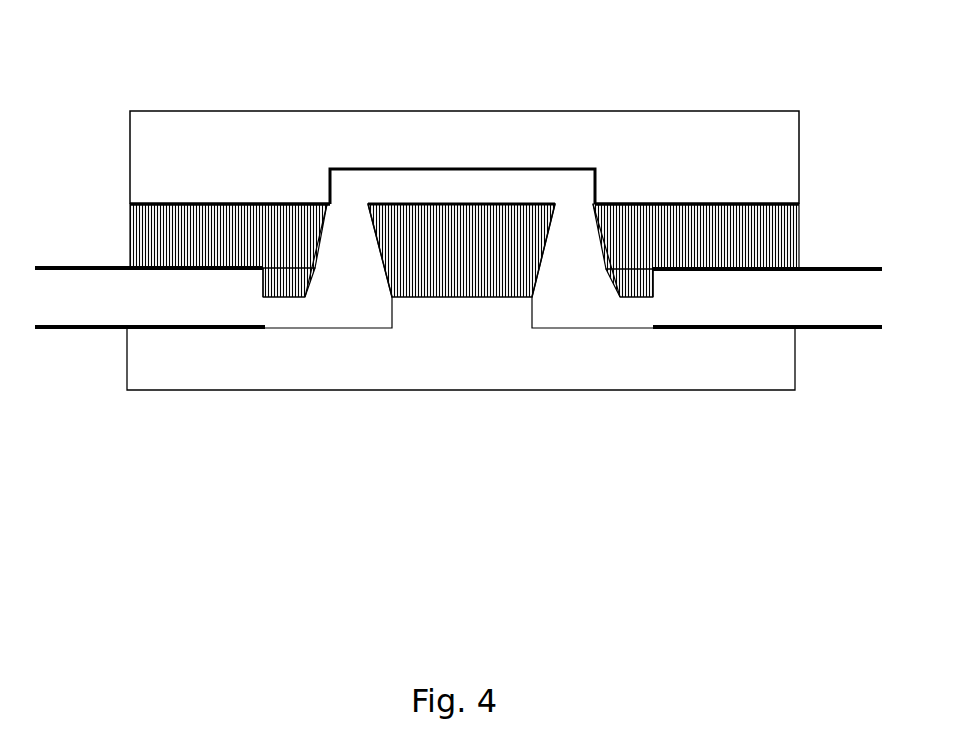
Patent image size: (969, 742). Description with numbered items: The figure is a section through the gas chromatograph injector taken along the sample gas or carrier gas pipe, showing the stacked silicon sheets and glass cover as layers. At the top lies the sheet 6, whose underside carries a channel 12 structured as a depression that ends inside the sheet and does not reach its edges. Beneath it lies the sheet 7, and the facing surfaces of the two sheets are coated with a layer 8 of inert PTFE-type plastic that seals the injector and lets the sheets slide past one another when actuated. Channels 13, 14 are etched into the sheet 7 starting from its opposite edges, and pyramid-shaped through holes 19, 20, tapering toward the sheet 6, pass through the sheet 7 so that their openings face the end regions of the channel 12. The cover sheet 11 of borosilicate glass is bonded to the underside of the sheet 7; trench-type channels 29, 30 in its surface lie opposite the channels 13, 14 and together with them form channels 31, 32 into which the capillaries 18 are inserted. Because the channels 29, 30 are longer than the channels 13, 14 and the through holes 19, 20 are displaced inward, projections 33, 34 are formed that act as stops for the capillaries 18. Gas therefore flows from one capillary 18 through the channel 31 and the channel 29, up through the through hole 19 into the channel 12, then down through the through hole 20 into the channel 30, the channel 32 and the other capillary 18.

The sheet 6 is at (645, 133).
The sheet 7 is at (758, 235).
The layer 8 is at (250, 203).
The cover sheet 11 is at (662, 370).
The channels 12 is at (457, 187).
The channel 13 is at (163, 282).
The channel 14 is at (722, 282).
The capillaries 18 is at (73, 327).
The through hole 19 is at (355, 258).
The through hole 20 is at (565, 265).
The trench-type channel 29 is at (295, 315).
The trench-type channel 30 is at (620, 317).
The channel 31 is at (227, 300).
The channel 32 is at (777, 297).
The projection 33 is at (281, 292).
The projection 34 is at (633, 297).